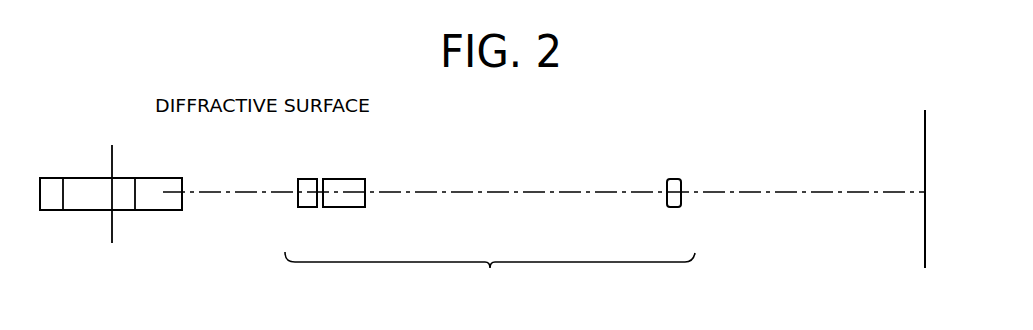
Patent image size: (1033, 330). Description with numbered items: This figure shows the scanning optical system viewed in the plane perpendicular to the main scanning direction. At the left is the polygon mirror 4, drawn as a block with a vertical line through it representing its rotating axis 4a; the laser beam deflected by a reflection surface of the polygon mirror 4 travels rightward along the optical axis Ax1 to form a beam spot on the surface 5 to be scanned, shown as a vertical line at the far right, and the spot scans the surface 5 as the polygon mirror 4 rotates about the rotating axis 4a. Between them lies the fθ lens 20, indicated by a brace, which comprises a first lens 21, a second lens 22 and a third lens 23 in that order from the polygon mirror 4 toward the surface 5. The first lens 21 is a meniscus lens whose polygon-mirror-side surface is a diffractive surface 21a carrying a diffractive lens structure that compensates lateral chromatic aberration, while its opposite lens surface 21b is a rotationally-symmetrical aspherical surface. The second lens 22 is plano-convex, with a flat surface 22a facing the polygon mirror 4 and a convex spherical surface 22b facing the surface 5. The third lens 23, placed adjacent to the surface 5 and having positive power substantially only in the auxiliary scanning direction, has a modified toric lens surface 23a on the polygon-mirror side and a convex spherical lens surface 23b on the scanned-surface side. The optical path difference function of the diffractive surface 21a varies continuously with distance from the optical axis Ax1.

The polygon mirror 4 is at (143, 204).
The rotating axis 4a is at (112, 224).
The surface to be scanned 5 is at (925, 227).
The fθ lens 20 is at (490, 274).
The first lens 21 is at (308, 208).
The diffractive surface 21a is at (298, 187).
The lens surface of the first lens 21b is at (317, 187).
The second lens 22 is at (347, 208).
The flat surface 22a is at (323, 180).
The convex spherical surface 22b is at (365, 183).
The third lens 23 is at (672, 208).
The lens surface of the third lens 23a is at (667, 183).
The lens surface of the third lens 23b is at (681, 183).
The optical axis Ax1 is at (787, 188).